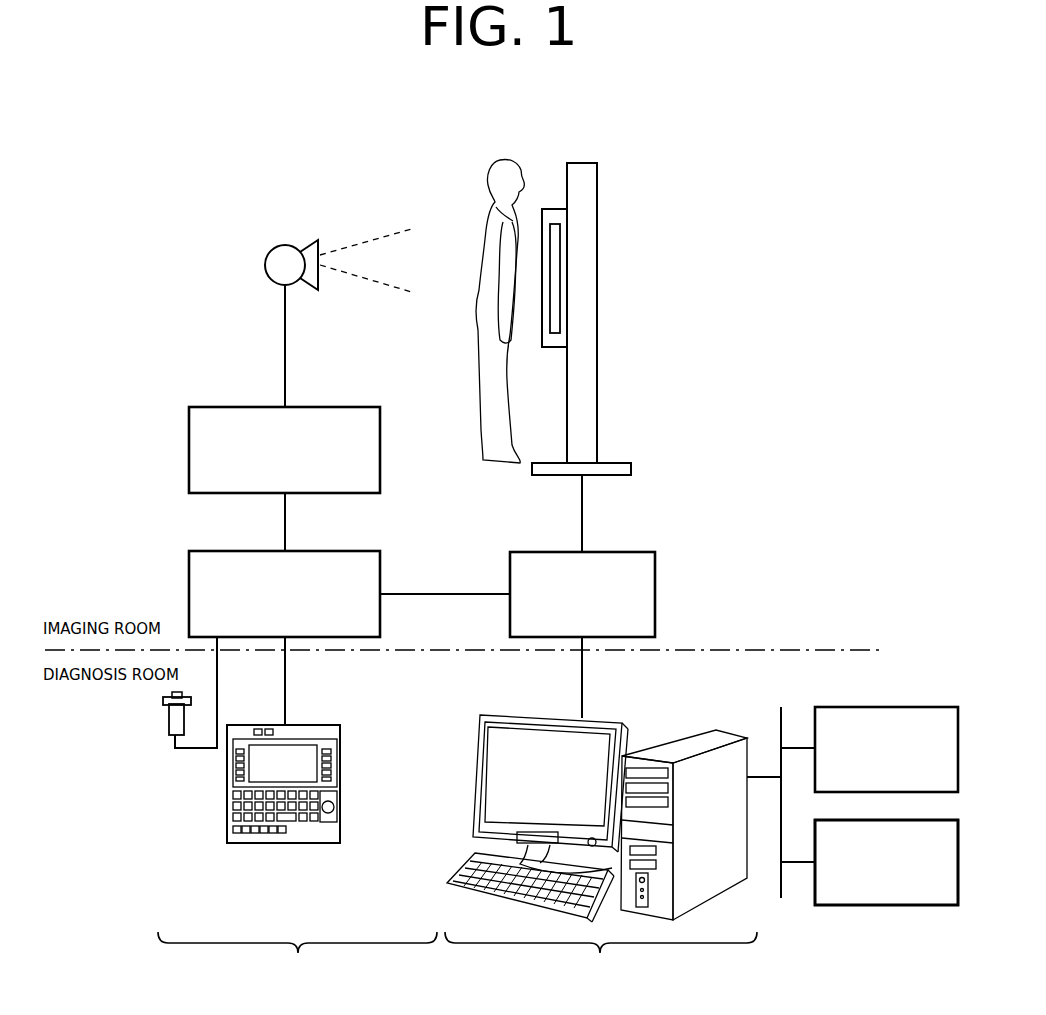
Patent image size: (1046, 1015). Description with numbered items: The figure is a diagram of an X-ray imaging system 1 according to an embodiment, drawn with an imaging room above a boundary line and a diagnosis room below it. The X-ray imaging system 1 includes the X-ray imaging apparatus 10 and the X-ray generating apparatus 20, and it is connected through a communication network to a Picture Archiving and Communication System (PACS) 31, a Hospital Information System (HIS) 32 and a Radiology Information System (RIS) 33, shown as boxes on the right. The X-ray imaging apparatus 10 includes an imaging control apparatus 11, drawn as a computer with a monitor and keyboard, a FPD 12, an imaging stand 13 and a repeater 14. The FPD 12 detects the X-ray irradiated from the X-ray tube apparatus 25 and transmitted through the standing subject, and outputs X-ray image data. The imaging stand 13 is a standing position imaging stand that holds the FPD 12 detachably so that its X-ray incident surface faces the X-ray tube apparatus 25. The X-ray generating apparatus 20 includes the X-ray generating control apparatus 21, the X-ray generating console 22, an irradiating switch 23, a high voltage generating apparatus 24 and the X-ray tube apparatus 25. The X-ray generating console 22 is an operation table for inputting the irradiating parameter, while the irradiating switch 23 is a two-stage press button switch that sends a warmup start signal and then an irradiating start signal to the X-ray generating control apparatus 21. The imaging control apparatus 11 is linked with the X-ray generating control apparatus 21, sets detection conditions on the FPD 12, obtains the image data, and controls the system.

The X-ray imaging system 1 is at (692, 164).
The X-ray imaging apparatus 10 is at (601, 962).
The imaging control apparatus 11 is at (478, 800).
The FPD 12 is at (555, 292).
The imaging stand 13 is at (592, 402).
The repeater 14 is at (657, 568).
The X-ray generating apparatus 20 is at (297, 962).
The X-ray generating control apparatus 21 is at (383, 568).
The X-ray generating console 22 is at (342, 733).
The irradiating switch 23 is at (165, 727).
The high voltage generating apparatus 24 is at (383, 433).
The X-ray tube apparatus 25 is at (265, 257).
The Picture Archiving and Communication System (PACS) 31 is at (888, 703).
The Hospital Information System (HIS) 32 is at (912, 907).
The Radiology Information System (RIS) 33 is at (912, 907).